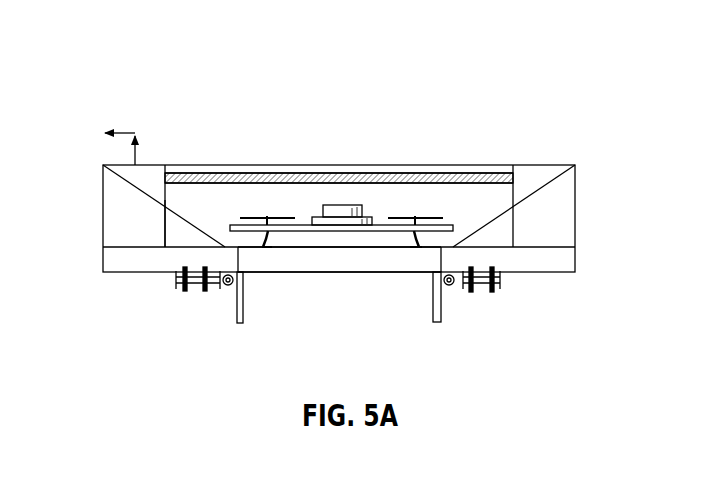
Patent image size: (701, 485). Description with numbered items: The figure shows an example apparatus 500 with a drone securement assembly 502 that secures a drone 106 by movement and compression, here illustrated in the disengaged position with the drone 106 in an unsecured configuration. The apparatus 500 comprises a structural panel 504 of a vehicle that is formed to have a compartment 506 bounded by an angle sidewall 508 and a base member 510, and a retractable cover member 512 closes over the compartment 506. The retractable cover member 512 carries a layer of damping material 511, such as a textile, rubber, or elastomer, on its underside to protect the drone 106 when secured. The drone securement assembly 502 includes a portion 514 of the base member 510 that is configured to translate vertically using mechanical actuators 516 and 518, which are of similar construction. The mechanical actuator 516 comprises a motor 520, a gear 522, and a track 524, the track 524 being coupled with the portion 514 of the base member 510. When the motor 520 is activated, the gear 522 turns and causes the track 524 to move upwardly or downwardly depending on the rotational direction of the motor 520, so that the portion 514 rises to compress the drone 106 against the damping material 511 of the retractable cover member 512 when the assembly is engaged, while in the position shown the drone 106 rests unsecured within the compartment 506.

The apparatus 500 is at (125, 61).
The drone securement assembly 502 is at (555, 223).
The structural panel 504 is at (575, 200).
The compartment 506 is at (470, 205).
The angle sidewall 508 is at (178, 213).
The base member 510 is at (303, 253).
The layer of damping material 511 is at (418, 178).
The retractable cover member 512 is at (262, 165).
The portion of the base member 514 is at (362, 265).
The mechanical actuator 516 is at (515, 324).
The mechanical actuator 518 is at (170, 278).
The motor 520 is at (502, 280).
The gear 522 is at (452, 285).
The track 524 is at (437, 320).
The drone 106 is at (340, 205).